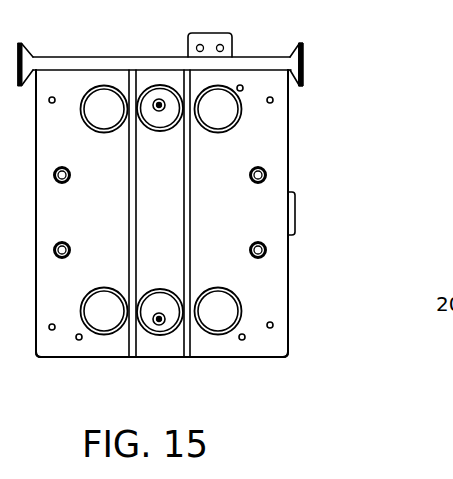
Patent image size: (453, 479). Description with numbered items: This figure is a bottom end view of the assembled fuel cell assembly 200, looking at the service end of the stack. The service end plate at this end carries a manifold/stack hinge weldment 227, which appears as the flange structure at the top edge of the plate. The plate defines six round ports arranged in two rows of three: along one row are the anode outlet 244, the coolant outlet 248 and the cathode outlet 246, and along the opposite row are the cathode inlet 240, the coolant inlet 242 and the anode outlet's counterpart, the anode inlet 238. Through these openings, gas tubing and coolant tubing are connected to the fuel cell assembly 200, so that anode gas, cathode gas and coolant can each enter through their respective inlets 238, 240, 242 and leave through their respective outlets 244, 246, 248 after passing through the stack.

The fuel cell assembly 200 is at (310, 163).
The manifold/stack hinge weldment 227 is at (289, 69).
The anode inlet 238 is at (223, 338).
The cathode inlet 240 is at (91, 335).
The coolant inlet 242 is at (168, 338).
The anode outlet 244 is at (93, 88).
The cathode outlet 246 is at (236, 88).
The coolant outlet 248 is at (164, 88).